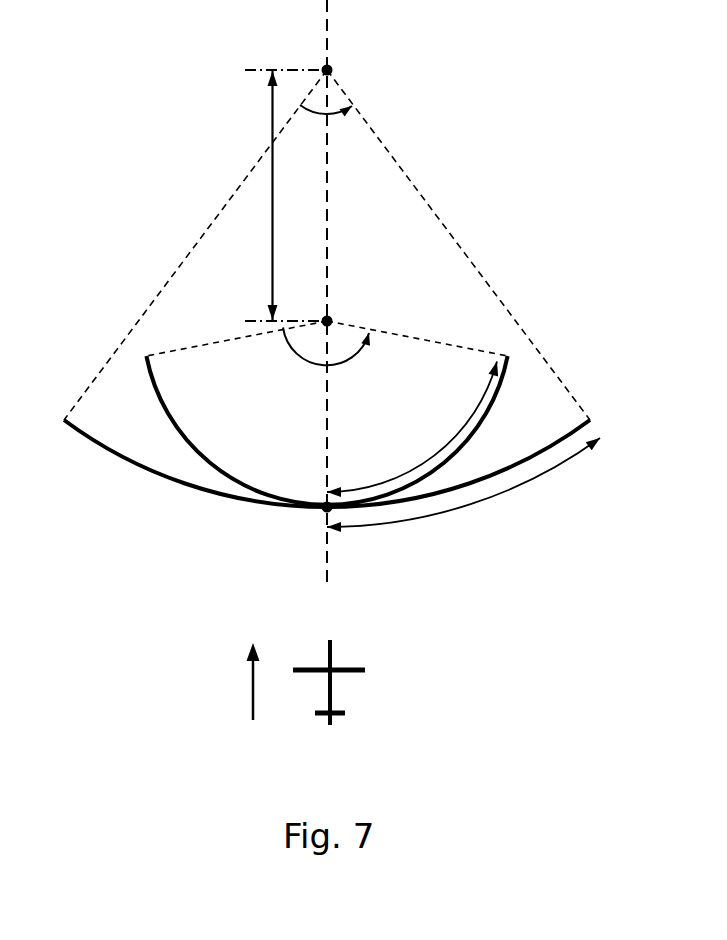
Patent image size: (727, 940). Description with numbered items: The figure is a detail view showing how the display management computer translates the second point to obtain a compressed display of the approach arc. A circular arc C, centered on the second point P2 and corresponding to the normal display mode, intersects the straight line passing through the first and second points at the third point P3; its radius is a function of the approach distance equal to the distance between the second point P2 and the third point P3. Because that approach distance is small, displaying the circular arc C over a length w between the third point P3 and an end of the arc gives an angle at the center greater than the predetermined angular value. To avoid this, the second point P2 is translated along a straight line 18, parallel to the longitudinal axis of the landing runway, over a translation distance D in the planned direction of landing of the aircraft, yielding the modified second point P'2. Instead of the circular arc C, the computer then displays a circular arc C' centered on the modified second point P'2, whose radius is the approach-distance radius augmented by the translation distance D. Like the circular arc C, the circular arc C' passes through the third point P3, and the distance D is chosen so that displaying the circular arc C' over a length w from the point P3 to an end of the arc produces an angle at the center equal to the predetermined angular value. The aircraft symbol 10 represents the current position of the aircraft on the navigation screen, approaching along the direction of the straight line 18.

The straight line 18 is at (329, 231).
The aircraft symbol 10 is at (333, 690).
The modified second point P'2 is at (334, 58).
The second point P2 is at (333, 320).
The third point P3 is at (322, 510).
The translation distance D is at (263, 195).
The circular arc C is at (305, 430).
The circular arc C' is at (327, 483).
The length w is at (463, 449).